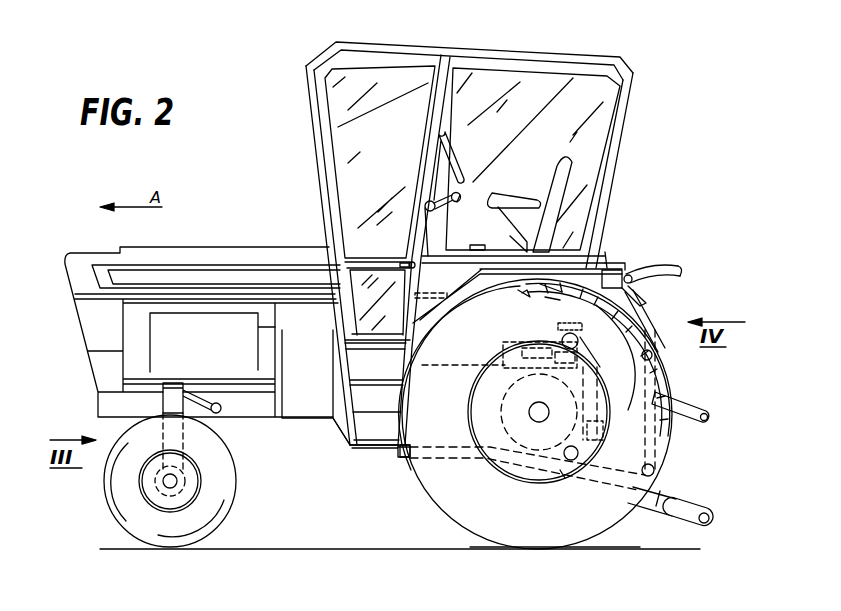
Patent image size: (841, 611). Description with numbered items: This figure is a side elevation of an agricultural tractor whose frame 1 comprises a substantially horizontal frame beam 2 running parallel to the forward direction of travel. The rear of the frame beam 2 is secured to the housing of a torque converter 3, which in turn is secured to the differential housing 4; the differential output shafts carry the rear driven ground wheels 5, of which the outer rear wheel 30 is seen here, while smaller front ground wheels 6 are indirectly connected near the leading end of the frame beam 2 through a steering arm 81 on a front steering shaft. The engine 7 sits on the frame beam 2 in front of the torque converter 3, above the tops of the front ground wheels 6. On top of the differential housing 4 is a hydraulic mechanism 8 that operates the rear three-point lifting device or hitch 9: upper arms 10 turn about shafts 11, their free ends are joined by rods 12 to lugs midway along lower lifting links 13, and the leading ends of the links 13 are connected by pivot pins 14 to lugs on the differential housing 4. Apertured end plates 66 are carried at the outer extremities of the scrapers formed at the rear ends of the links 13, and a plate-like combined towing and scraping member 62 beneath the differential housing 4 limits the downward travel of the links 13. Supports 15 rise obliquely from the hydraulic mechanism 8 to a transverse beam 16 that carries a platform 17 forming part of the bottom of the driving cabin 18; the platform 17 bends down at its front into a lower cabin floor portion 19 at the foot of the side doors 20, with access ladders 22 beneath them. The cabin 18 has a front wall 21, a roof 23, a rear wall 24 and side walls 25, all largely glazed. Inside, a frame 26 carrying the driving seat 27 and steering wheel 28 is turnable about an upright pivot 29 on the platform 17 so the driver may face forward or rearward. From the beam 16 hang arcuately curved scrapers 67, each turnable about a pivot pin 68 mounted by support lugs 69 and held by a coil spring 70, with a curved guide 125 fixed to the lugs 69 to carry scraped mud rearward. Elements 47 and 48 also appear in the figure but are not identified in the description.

The frame 1 is at (288, 436).
The frame beam 2 is at (256, 395).
The torque converter 3 is at (314, 418).
The differential housing 4 is at (338, 442).
The rear driven ground wheels 5 is at (444, 525).
The front ground wheels 6 is at (215, 524).
The engine 7 is at (152, 333).
The hydraulic mechanism 8 is at (548, 337).
The three-point lifting device or hitch 9 is at (722, 467).
The upper arms 10 is at (613, 330).
The shafts 11 is at (562, 328).
The rods 12 is at (664, 453).
The lower lifting links 13 is at (659, 512).
The pivot pins 14 is at (560, 476).
The supports 15 is at (580, 312).
The beam 16 is at (625, 268).
The platform 17 is at (607, 266).
The driving cabin 18 is at (463, 255).
The lower cabin floor portion 19 is at (369, 346).
The side doors 20 is at (330, 141).
The front wall 21 is at (318, 172).
The access ladders 22 is at (383, 452).
The cabin roof 23 is at (435, 52).
The rear wall 24 is at (631, 99).
The side walls 25 is at (607, 137).
The frame 26 is at (442, 227).
The driving seat 27 is at (527, 201).
The steering wheel 28 is at (463, 170).
The upright pivot 29 is at (482, 252).
The rear wheel 30 is at (596, 540).
The bracket 47 is at (606, 432).
The wheel hub 48 is at (505, 411).
The combined towing and scraping member 62 is at (499, 466).
The end plates 66 is at (708, 514).
The arcuately curved scrapers 67 is at (641, 317).
The pivot pin 68 is at (633, 281).
The support lugs 69 is at (640, 271).
The coil spring 70 is at (647, 307).
The steering arm 81 is at (202, 426).
The curved guide 125 is at (682, 270).